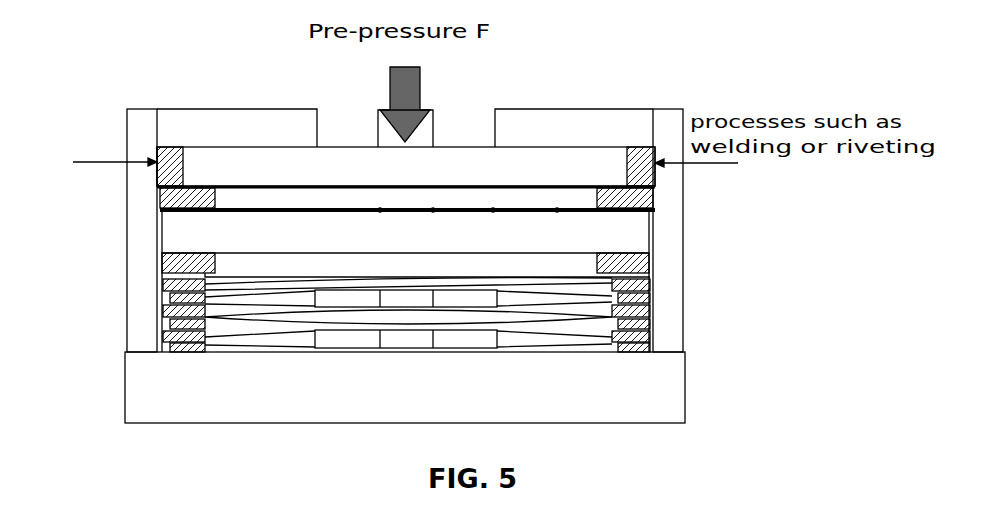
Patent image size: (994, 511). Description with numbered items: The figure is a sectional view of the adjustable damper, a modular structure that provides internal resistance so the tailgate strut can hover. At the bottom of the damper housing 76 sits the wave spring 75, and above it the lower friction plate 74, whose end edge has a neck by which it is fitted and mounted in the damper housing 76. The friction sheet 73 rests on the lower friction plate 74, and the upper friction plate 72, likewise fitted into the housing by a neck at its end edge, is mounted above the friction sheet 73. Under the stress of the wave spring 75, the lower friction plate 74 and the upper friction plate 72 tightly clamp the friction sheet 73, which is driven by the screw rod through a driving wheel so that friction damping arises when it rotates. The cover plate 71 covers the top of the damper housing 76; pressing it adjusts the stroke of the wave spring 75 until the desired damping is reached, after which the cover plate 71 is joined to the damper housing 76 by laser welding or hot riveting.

The cover plate 71 is at (162, 155).
The upper friction plate 72 is at (162, 203).
The friction sheet 73 is at (168, 233).
The lower friction plate 74 is at (160, 263).
The wave spring 75 is at (168, 313).
The damper housing 76 is at (145, 385).